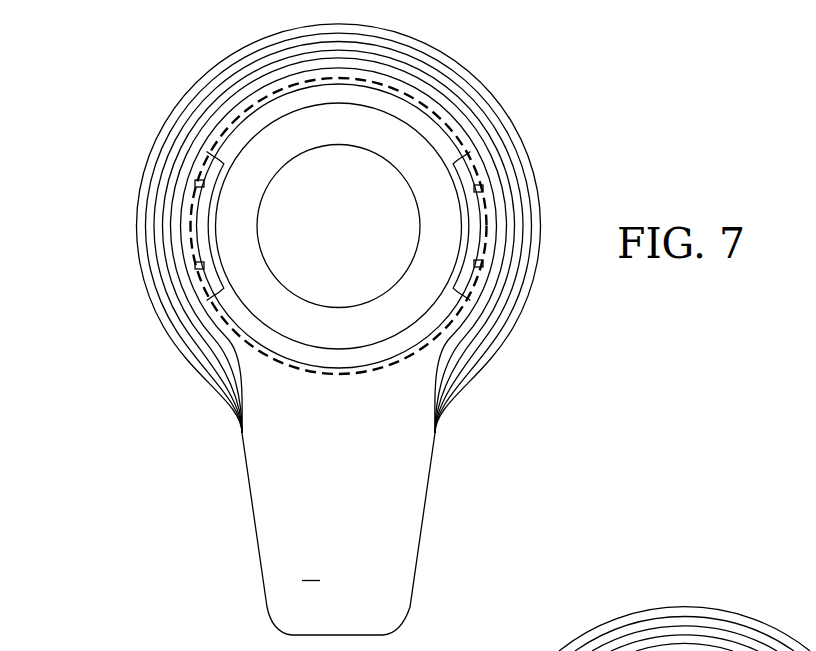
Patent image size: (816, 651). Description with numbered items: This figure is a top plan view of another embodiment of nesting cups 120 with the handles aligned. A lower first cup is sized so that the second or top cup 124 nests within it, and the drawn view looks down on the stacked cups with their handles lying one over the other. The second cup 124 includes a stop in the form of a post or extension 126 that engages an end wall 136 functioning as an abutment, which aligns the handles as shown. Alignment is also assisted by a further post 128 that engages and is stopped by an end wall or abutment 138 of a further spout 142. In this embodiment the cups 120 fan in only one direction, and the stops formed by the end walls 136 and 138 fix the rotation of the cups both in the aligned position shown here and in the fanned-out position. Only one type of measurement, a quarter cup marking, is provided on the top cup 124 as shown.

The nesting cups 120 is at (187, 483).
The second cup 124 is at (292, 530).
The post 126 is at (197, 188).
The further post 128 is at (483, 267).
The end wall 136 is at (200, 182).
The end wall 138 is at (480, 273).
The further spout 142 is at (483, 210).